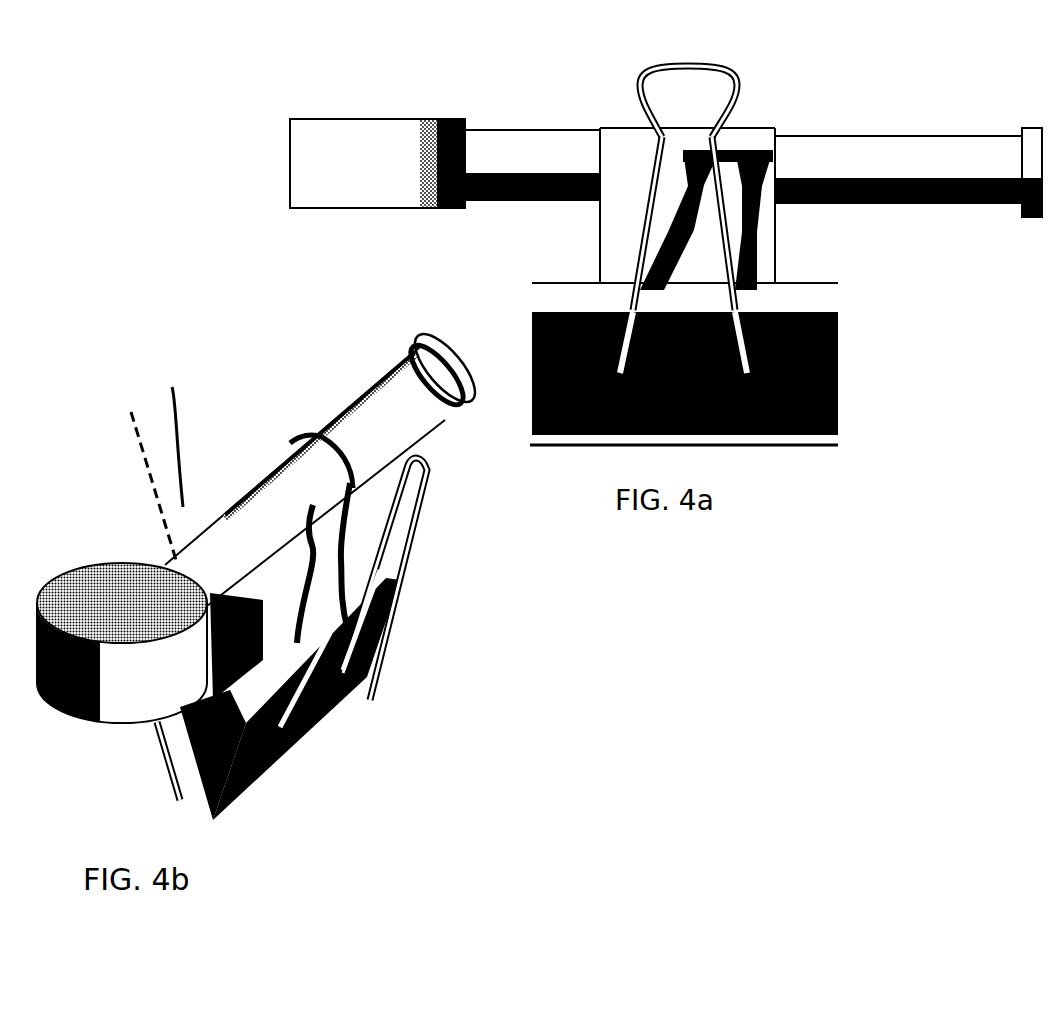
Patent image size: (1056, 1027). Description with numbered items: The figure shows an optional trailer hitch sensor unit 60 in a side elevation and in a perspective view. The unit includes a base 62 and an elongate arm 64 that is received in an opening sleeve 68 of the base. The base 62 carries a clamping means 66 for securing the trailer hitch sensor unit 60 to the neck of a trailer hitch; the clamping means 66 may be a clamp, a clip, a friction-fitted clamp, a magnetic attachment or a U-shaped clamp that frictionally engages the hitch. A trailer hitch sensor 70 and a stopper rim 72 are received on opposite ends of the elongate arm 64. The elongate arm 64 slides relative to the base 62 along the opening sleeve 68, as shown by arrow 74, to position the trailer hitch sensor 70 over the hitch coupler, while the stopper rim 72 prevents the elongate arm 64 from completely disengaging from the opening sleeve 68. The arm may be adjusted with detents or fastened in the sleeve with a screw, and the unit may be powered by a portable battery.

In FIG. 4A, the trailer hitch sensor unit 60 is at (824, 497).
In FIG. 4B, the trailer hitch sensor unit 60 is at (404, 665).
In FIG. 4A, the base 62 is at (775, 255).
In FIG. 4B, the base 62 is at (280, 456).
In FIG. 4A, the elongate arm 64 is at (540, 128).
In FIG. 4B, the elongate arm 64 is at (362, 392).
In FIG. 4A, the clamping means 66 is at (840, 378).
In FIG. 4A, the opening sleeve 68 is at (777, 141).
In FIG. 4B, the opening sleeve 68 is at (210, 506).
In FIG. 4A, the trailer hitch sensor 70 is at (385, 112).
In FIG. 4A, the stopper rim 72 is at (1030, 222).
In FIG. 4A, the arrow 74 is at (787, 80).
In FIG. 4B, the arrow 74 is at (423, 523).